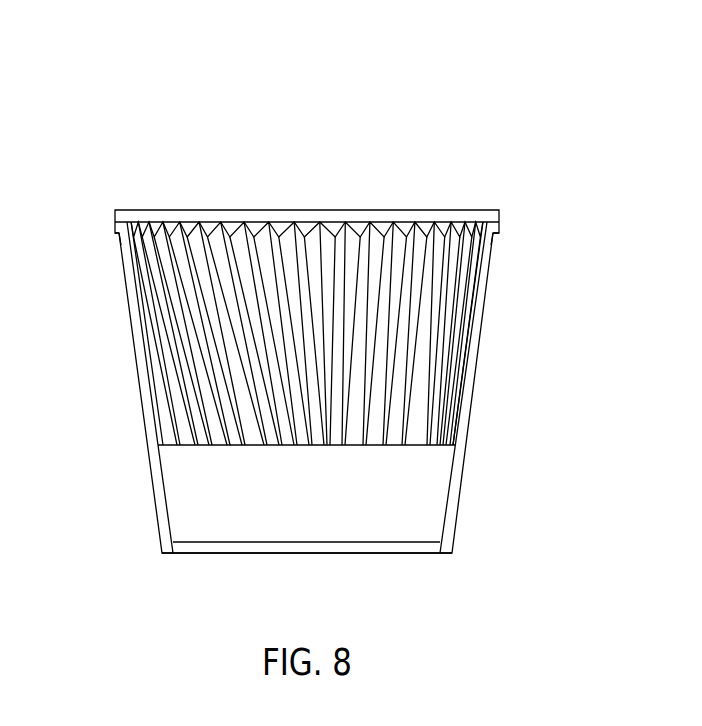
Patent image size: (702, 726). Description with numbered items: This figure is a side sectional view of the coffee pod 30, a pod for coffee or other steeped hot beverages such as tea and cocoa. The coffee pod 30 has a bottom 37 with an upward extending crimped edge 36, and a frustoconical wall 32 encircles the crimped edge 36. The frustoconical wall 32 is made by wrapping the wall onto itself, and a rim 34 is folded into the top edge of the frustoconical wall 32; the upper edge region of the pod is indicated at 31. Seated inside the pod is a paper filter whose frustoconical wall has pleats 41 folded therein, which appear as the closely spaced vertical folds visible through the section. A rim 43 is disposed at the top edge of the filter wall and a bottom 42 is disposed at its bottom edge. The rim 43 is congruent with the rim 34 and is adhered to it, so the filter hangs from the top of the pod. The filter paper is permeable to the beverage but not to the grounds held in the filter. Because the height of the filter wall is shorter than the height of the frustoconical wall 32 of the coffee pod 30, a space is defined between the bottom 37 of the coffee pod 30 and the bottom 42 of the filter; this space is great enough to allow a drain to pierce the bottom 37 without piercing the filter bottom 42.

The coffee pod 30 is at (527, 117).
The rim 31 is at (483, 210).
The frustoconical wall 32 is at (478, 354).
The rim 34 is at (494, 233).
The crimped edge 36 is at (168, 517).
The bottom 37 is at (418, 553).
The pleats 41 is at (279, 233).
The bottom 42 is at (408, 447).
The rim 43 is at (120, 231).